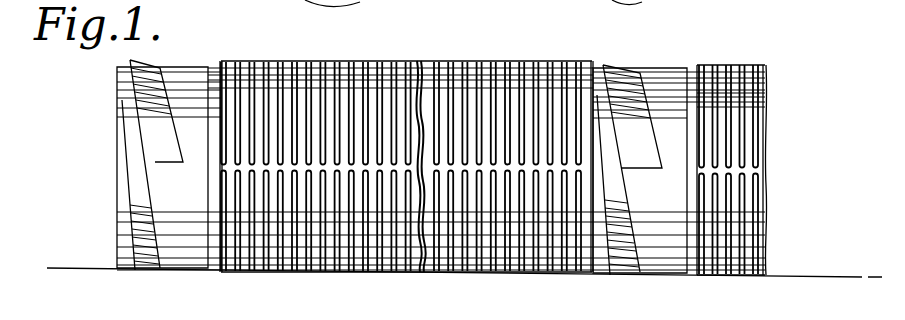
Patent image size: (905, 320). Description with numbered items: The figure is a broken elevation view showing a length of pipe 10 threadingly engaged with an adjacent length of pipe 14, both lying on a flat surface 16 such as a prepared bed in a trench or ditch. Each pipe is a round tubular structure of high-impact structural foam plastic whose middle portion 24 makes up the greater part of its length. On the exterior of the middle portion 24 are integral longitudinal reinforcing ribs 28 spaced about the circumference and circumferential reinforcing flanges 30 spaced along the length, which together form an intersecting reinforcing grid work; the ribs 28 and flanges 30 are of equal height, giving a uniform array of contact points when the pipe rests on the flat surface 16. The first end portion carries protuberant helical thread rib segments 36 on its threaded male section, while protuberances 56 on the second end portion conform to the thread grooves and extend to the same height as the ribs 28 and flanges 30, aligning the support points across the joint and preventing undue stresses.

The length of pipe 10 is at (342, 52).
The length of pipe 14 is at (767, 61).
The flat surface 16 is at (834, 277).
The middle portion 24 is at (333, 272).
The exterior longitudinal reinforcing ribs 28 is at (707, 65).
The peripheral circumferential reinforcing flanges 30 is at (737, 122).
The helical thread rib segments 36 is at (258, 0).
The protuberances 56 is at (135, 193).